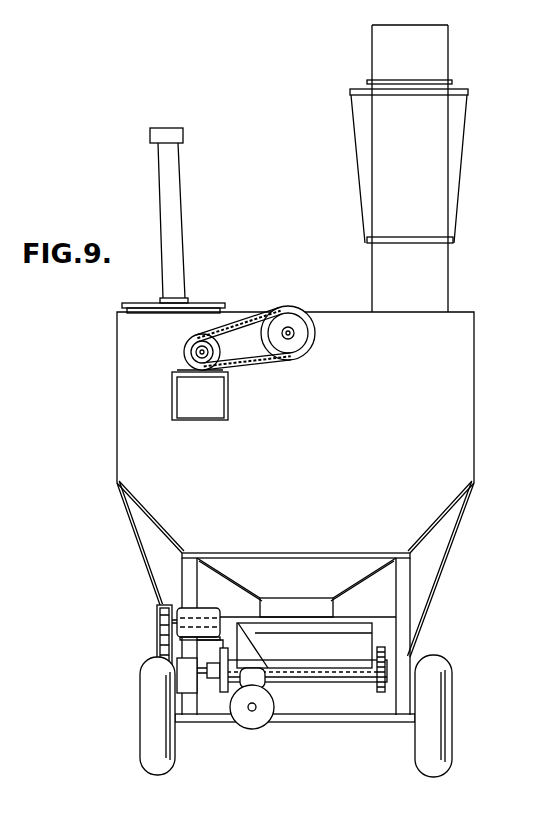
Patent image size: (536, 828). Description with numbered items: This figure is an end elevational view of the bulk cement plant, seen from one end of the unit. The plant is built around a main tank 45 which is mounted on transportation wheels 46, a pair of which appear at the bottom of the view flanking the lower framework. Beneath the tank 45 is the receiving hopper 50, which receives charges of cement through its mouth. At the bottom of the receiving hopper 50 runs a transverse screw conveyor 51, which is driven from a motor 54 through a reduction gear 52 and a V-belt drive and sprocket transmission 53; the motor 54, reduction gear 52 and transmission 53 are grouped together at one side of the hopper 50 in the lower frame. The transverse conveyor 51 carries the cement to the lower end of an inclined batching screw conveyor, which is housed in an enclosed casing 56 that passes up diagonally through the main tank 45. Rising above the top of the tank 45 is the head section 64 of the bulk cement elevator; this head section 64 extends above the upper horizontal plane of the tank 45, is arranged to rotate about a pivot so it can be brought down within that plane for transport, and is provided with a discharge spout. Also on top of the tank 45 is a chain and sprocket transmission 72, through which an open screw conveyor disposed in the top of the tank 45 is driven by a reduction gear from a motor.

The main tank 45 is at (464, 360).
The head section 64 is at (358, 150).
The chain and sprocket transmission 72 is at (265, 355).
The receiving hopper 50 is at (323, 663).
The transverse screw conveyor 51 is at (368, 672).
The V-belt drive and sprocket transmission 53 is at (158, 645).
The motor 54 is at (230, 598).
The reduction gear 52 is at (188, 677).
The enclosed casing 56 is at (267, 687).
The transportation wheels 46 is at (157, 752).